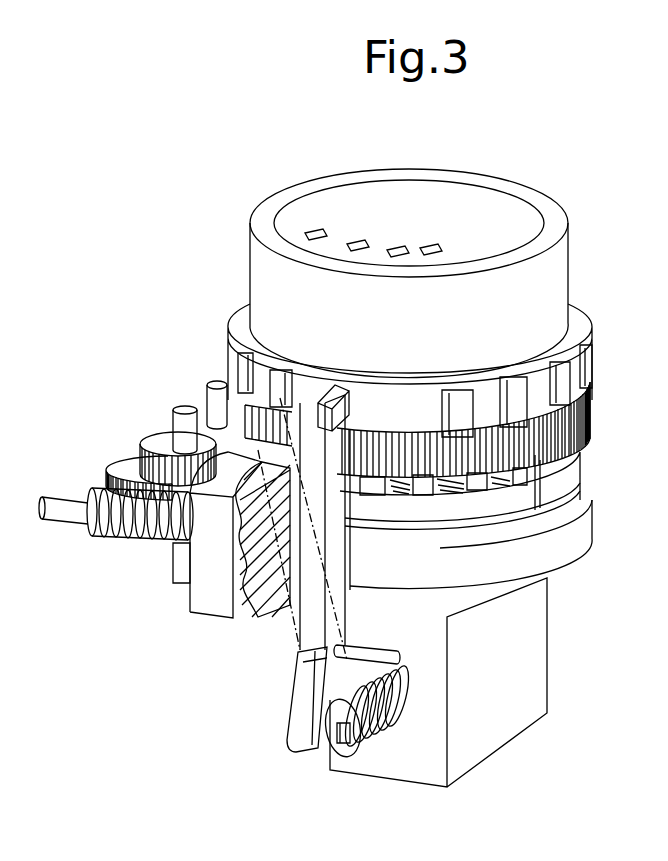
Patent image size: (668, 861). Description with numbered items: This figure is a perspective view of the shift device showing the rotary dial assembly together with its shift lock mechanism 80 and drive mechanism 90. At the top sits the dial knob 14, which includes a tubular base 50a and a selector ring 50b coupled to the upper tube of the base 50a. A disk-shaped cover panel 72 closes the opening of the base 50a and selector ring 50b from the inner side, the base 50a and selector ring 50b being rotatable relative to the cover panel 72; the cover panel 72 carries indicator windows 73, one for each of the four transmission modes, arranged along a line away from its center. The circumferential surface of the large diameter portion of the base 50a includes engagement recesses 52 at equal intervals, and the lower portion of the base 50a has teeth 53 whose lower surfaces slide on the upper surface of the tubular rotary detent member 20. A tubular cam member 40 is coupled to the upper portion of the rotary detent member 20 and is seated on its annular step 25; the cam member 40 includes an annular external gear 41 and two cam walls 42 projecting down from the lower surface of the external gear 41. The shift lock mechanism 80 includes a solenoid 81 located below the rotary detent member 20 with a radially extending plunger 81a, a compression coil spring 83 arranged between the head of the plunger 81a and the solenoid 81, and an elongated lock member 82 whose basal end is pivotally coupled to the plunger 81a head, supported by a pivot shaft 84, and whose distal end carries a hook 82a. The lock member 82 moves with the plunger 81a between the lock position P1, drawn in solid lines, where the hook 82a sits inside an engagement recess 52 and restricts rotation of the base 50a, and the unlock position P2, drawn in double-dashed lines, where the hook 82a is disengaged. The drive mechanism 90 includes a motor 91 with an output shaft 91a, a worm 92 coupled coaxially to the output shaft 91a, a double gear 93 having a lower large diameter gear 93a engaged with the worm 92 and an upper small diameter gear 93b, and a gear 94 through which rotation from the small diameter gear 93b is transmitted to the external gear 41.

The cover panel 72 is at (432, 192).
The indicator windows 73 is at (365, 247).
The dial knob 14 is at (435, 278).
The selector ring 50b is at (570, 258).
The base 50a is at (594, 342).
The engagement recesses 52 is at (352, 428).
The hook 82a is at (336, 406).
The teeth 53 is at (478, 490).
The cam member 40 is at (505, 511).
The external gear 41 is at (588, 402).
The cam walls 42 is at (567, 461).
The step 25 is at (525, 510).
The rotary detent member 20 is at (473, 573).
The lock position P1 is at (358, 572).
The shift lock mechanism 80 is at (416, 628).
The lock member 82 is at (294, 573).
The unlock position P2 is at (285, 631).
The pivot shaft 84 is at (373, 650).
The compression coil spring 83 is at (403, 727).
The plunger 81a is at (366, 735).
The solenoid 81 is at (537, 686).
The drive mechanism 90 is at (164, 502).
The motor 91 is at (210, 604).
The output shaft 91a is at (62, 511).
The worm 92 is at (124, 540).
The double gear 93 is at (131, 424).
The large diameter gear 93a is at (127, 466).
The small diameter gear 93b is at (150, 446).
The gear 94 is at (205, 410).